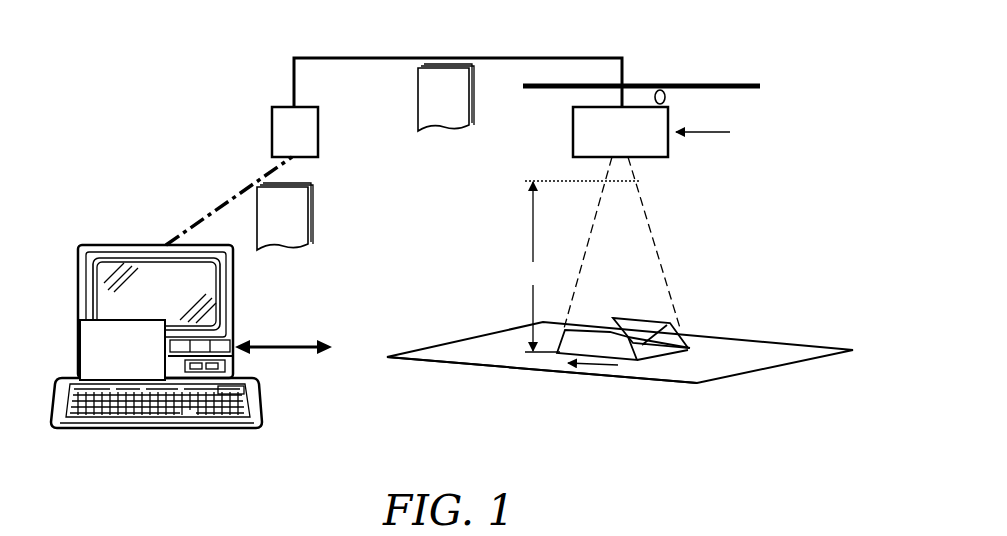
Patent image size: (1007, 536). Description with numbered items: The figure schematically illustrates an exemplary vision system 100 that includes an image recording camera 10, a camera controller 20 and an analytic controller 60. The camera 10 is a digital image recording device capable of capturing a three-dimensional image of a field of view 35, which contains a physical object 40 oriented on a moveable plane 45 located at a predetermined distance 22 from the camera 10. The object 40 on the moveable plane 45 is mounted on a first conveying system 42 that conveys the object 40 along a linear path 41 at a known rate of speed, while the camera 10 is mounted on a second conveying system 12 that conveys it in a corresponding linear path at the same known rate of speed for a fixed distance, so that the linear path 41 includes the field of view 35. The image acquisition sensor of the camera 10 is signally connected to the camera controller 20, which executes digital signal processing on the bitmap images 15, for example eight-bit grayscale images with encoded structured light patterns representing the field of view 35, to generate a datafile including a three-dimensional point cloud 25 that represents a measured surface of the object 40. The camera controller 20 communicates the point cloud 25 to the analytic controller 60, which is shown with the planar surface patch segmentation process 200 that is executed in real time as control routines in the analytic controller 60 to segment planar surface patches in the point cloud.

The vision system 100 is at (215, 160).
The camera 10 is at (611, 141).
The second conveying system 12 is at (697, 83).
The bitmap images 15 is at (435, 106).
The camera controller 20 is at (286, 141).
The predetermined distance 22 is at (581, 266).
The 3D point cloud 25 is at (274, 225).
The field of view 35 is at (660, 253).
The physical object 40 is at (682, 330).
The linear path 41 is at (592, 366).
The first conveying system 42 is at (688, 392).
The moveable plane 45 is at (779, 350).
The analytic controller 60 is at (144, 306).
The planar surface patch segmentation process 200 is at (107, 362).